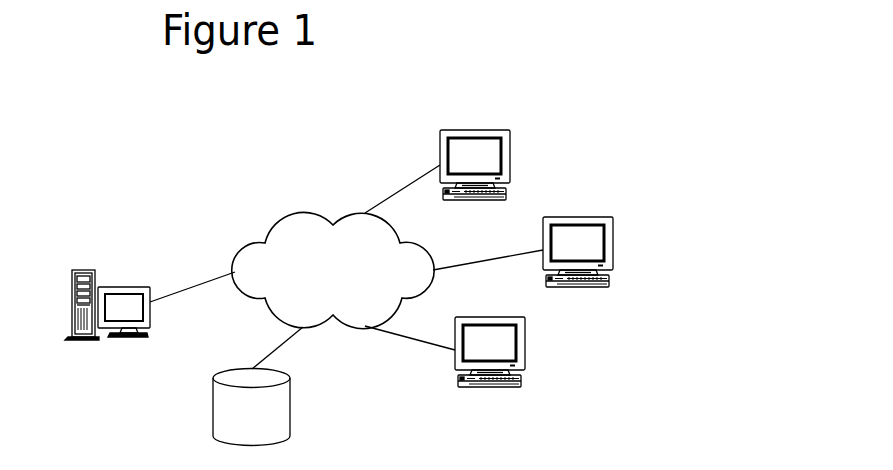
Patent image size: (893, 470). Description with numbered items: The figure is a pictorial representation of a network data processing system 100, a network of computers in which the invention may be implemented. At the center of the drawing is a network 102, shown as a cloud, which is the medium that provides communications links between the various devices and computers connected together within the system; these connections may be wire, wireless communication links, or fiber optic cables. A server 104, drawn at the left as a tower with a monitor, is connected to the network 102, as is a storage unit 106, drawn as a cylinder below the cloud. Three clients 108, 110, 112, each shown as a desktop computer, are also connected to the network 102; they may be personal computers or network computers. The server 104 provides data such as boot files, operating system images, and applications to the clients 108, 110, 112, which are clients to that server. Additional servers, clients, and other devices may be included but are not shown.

The network data processing system 100 is at (421, 380).
The network 102 is at (349, 266).
The server 104 is at (125, 287).
The storage unit 106 is at (290, 407).
The client 108 is at (475, 130).
The client 110 is at (580, 217).
The client 112 is at (527, 352).